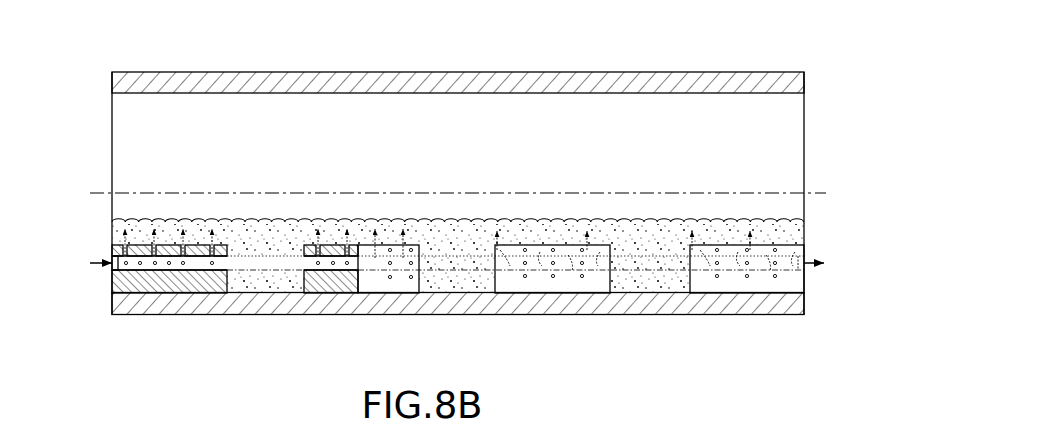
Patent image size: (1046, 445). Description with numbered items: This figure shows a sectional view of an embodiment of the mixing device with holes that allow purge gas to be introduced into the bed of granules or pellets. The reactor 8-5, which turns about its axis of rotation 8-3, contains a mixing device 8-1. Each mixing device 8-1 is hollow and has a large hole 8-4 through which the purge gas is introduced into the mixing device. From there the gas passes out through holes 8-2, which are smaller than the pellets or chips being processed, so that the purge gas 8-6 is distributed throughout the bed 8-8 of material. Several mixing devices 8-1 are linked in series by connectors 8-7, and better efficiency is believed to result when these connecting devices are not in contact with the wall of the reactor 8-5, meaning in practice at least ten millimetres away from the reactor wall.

The mixing device 8-1 is at (163, 244).
The holes 8-2 is at (198, 265).
The axis of rotation 8-3 is at (758, 189).
The large hole 8-4 is at (112, 271).
The reactor 8-5 is at (642, 68).
The purge gas 8-6 is at (527, 266).
The connectors 8-7 is at (262, 256).
The bed 8-8 is at (265, 281).